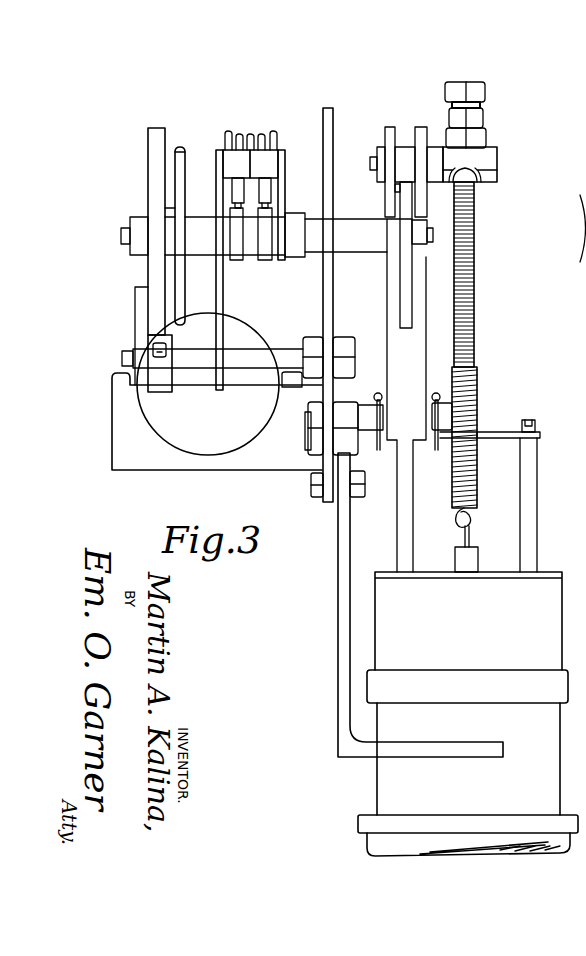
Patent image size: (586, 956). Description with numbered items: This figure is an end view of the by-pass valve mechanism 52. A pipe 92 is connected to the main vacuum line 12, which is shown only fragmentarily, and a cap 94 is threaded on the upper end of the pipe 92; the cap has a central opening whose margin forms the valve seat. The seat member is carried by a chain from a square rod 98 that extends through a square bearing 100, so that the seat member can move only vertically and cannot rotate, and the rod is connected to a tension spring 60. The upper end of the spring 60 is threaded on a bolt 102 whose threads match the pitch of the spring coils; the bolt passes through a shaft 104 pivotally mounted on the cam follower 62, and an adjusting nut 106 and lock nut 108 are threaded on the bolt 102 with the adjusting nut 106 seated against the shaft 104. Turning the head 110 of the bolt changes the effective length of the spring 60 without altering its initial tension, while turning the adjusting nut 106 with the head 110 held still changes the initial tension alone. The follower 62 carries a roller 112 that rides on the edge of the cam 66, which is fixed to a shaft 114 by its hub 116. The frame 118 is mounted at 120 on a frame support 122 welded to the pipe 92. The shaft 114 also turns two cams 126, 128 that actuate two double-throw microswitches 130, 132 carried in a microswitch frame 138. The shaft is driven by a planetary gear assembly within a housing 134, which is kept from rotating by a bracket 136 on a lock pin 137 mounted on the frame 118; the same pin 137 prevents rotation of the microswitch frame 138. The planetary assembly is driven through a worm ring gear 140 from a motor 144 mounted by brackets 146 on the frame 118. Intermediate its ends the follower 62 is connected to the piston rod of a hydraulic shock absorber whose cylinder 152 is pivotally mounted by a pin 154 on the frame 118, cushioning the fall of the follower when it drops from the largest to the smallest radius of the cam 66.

The main vacuum line 12 is at (372, 841).
The by-pass valve mechanism 52 is at (530, 413).
The tension spring 60 is at (477, 416).
The cam follower 62 is at (390, 127).
The cam 66 is at (405, 148).
The pipe 92 is at (388, 778).
The cap 94 is at (380, 681).
The square rod 98 is at (470, 545).
The square bearing 100 is at (460, 560).
The bolt 102 is at (480, 104).
The shaft 104 is at (497, 170).
The adjusting nut 106 is at (467, 142).
The lock nut 108 is at (472, 120).
The head 110 is at (482, 92).
The roller 112 is at (395, 186).
The shaft 114 is at (120, 236).
The hub 116 is at (422, 262).
The frame 118 is at (328, 108).
The mounting 120 is at (311, 484).
The frame support 122 is at (340, 566).
The cam 126 is at (237, 221).
The cam 128 is at (264, 236).
The double-throw microswitch 130 is at (230, 158).
The double-throw microswitch 132 is at (282, 153).
The housing 134 is at (152, 124).
The bracket 136 is at (150, 356).
The lock pin 137 is at (136, 360).
The microswitch frame 138 is at (222, 300).
The worm ring gear 140 is at (182, 145).
The motor 144 is at (223, 428).
The brackets 146 is at (140, 297).
The cylinder 152 is at (392, 332).
The pin 154 is at (478, 386).